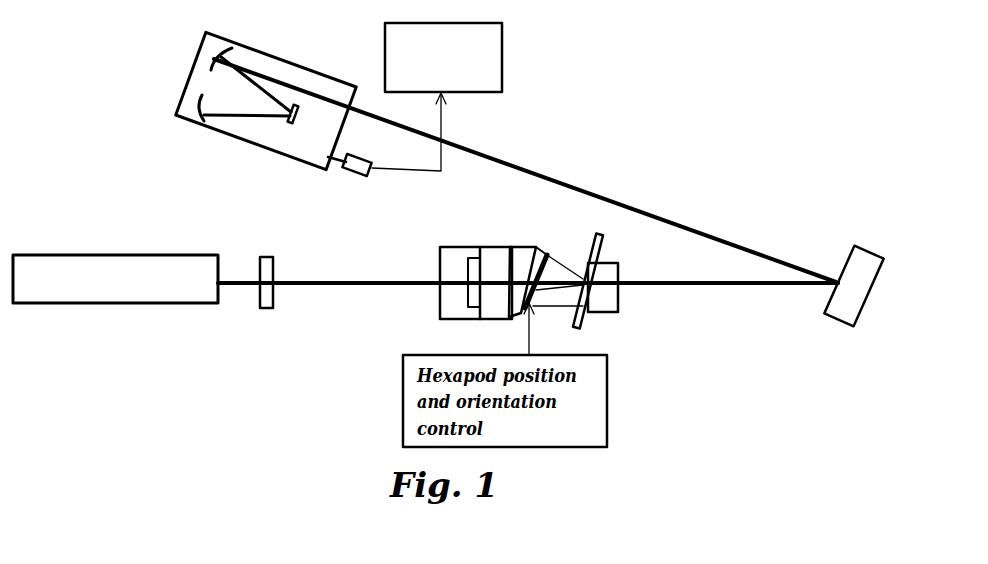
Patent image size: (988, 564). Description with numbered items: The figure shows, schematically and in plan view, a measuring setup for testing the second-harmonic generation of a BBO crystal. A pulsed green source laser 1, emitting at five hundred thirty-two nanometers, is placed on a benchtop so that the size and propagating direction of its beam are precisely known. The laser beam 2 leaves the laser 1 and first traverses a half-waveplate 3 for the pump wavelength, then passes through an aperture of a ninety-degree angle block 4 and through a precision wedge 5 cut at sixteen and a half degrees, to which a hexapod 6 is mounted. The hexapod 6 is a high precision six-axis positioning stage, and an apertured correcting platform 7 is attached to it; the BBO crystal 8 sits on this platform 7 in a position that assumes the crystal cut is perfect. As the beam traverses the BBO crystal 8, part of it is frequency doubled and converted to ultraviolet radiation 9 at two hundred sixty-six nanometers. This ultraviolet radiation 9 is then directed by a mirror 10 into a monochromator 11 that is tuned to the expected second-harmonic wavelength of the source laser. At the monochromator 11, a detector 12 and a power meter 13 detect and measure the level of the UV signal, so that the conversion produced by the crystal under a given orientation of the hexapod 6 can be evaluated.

The pulsed 532 nm laser 1 is at (60, 303).
The 532 nm laser beam 2 is at (240, 285).
The half-waveplate 3 is at (273, 308).
The 90° angle block 4 is at (450, 293).
The 16.5° precision wedge 5 is at (517, 264).
The hexapod 6 is at (563, 268).
The apertured correcting platform 7 is at (605, 247).
The BBO crystal 8 is at (607, 315).
The 266 nm radiation 9 is at (758, 288).
The mirror 10 is at (855, 325).
The monochromator 11 is at (200, 72).
The detector 12 is at (362, 178).
The power meter 13 is at (502, 55).